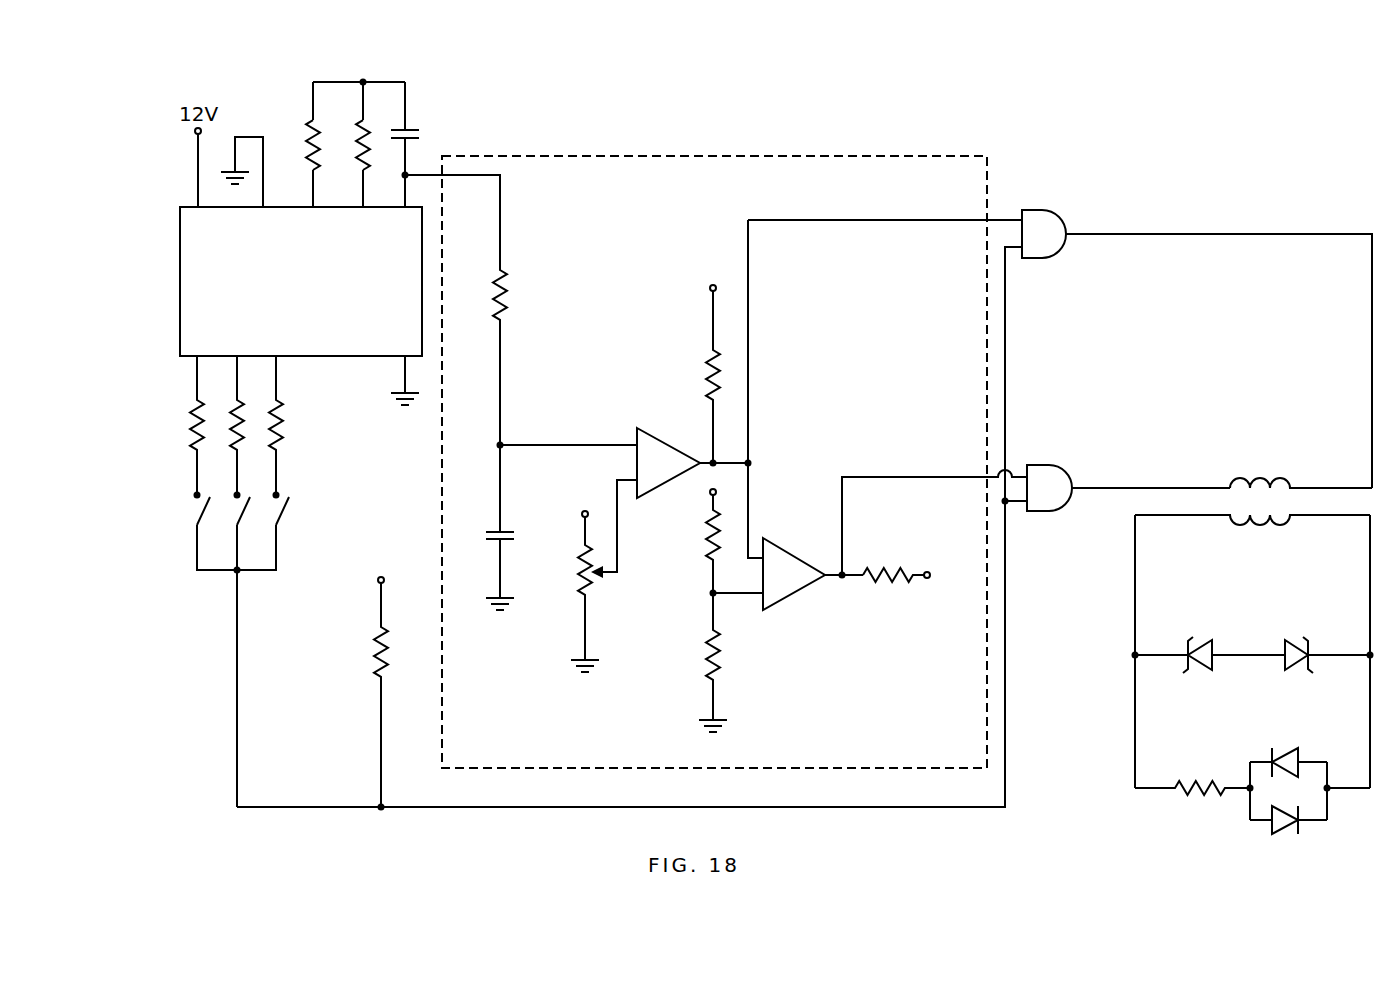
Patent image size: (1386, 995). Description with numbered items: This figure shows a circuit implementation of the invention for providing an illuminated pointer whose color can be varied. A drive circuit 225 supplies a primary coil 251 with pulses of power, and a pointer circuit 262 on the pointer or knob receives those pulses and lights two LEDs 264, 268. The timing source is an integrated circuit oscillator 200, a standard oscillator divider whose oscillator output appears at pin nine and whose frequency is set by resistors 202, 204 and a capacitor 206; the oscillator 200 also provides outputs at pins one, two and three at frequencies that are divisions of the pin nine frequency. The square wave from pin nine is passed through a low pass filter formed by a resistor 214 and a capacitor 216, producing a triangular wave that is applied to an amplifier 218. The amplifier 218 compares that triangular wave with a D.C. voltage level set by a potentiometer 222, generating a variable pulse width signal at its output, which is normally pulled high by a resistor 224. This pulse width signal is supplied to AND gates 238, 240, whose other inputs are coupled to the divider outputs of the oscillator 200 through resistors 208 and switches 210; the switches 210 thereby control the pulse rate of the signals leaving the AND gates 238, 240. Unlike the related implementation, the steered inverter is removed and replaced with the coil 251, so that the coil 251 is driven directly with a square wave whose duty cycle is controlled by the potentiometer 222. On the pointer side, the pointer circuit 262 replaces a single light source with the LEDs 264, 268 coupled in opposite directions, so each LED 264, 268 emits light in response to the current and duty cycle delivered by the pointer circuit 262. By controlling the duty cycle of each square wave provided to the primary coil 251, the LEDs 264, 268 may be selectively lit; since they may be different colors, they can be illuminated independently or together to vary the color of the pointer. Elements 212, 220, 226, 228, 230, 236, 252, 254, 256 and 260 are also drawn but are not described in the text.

The oscillator integrated circuit 200 is at (329, 356).
The resistor 202 is at (310, 150).
The resistor 204 is at (355, 150).
The capacitor 206 is at (412, 130).
The resistors 208 is at (176, 408).
The switches 210 is at (182, 516).
The resistor 212 is at (376, 648).
The resistor 214 is at (508, 292).
The capacitor 216 is at (498, 528).
The amplifier 218 is at (660, 427).
The pulse width control circuit 220 is at (655, 153).
The potentiometer 222 is at (595, 580).
The resistor 224 is at (708, 366).
The circuit 225 is at (922, 113).
The resistor 226 is at (708, 530).
The resistor 228 is at (716, 660).
The comparator 230 is at (790, 587).
The pull-up resistor 236 is at (905, 580).
The AND gate 238 is at (1043, 212).
The AND gate 240 is at (1048, 473).
The coil 251 is at (1273, 483).
The transformer secondary winding 252 is at (1245, 520).
The zener diode 254 is at (1200, 648).
The zener diode 256 is at (1290, 668).
The resistor 260 is at (1205, 795).
The pointer circuit 262 is at (1114, 746).
The LED 264 is at (1292, 752).
The LED 268 is at (1272, 823).